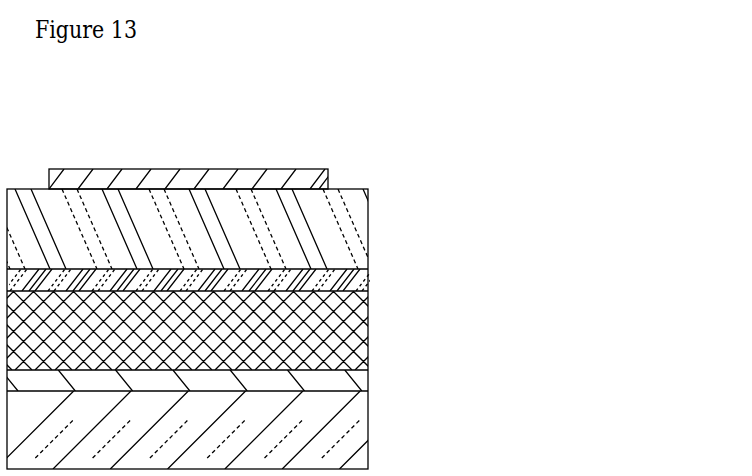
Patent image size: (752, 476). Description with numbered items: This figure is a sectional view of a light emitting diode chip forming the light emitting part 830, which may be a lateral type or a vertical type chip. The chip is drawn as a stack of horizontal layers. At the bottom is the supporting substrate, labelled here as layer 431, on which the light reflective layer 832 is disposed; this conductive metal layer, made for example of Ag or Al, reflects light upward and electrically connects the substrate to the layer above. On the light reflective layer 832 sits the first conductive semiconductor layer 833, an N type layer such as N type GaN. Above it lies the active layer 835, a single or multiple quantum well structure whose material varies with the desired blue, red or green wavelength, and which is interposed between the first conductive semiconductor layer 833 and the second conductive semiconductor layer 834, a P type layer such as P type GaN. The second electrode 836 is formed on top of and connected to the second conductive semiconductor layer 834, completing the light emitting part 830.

The light emitting part 830 is at (390, 173).
The second electrode 836 is at (187, 175).
The second conductive semiconductor layer 834 is at (356, 229).
The active layer 835 is at (358, 281).
The first conductive semiconductor layer 833 is at (358, 325).
The light reflective layer 832 is at (358, 377).
The substrate 431 is at (358, 423).